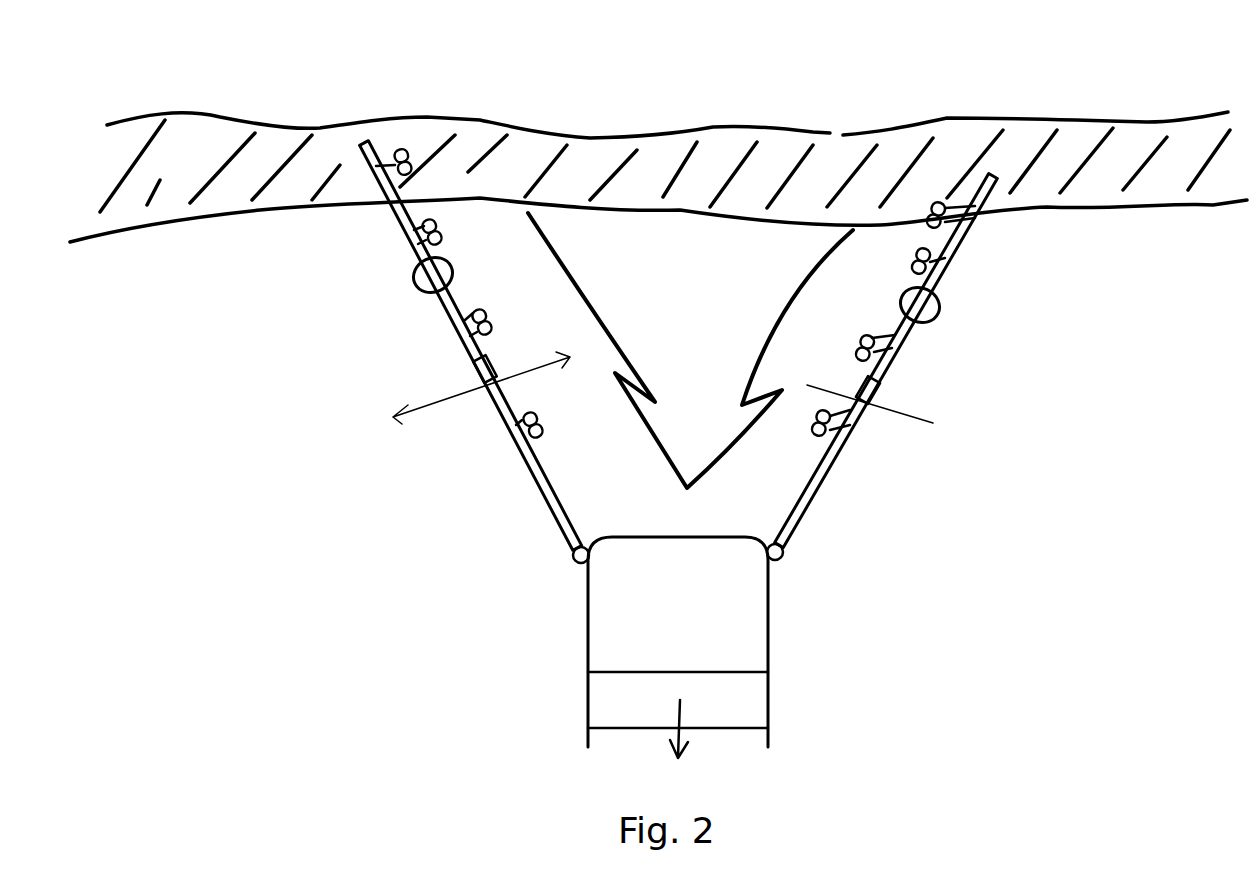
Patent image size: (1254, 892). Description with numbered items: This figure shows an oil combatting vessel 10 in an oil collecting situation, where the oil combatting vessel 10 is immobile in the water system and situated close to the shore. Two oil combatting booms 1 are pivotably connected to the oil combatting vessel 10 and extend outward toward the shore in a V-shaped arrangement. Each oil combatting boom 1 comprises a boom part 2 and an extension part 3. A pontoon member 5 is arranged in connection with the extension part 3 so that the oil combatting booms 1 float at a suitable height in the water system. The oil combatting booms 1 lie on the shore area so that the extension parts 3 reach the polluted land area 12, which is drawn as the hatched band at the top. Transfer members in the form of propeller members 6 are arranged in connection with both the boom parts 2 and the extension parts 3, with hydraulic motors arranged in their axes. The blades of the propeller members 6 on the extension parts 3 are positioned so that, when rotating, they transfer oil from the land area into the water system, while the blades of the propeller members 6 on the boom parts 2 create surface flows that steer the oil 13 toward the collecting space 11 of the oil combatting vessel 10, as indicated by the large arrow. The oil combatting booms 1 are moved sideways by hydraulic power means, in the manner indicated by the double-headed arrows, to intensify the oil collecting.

The oil combatting boom 1 is at (406, 352).
The boom part 2 is at (543, 467).
The extension part 3 is at (407, 240).
The pontoon member 5 is at (413, 285).
The propeller member 6 is at (451, 244).
The oil combatting vessel 10 is at (755, 634).
The collecting space 11 is at (745, 647).
The polluted land area 12 is at (528, 157).
The oil 13 is at (663, 263).